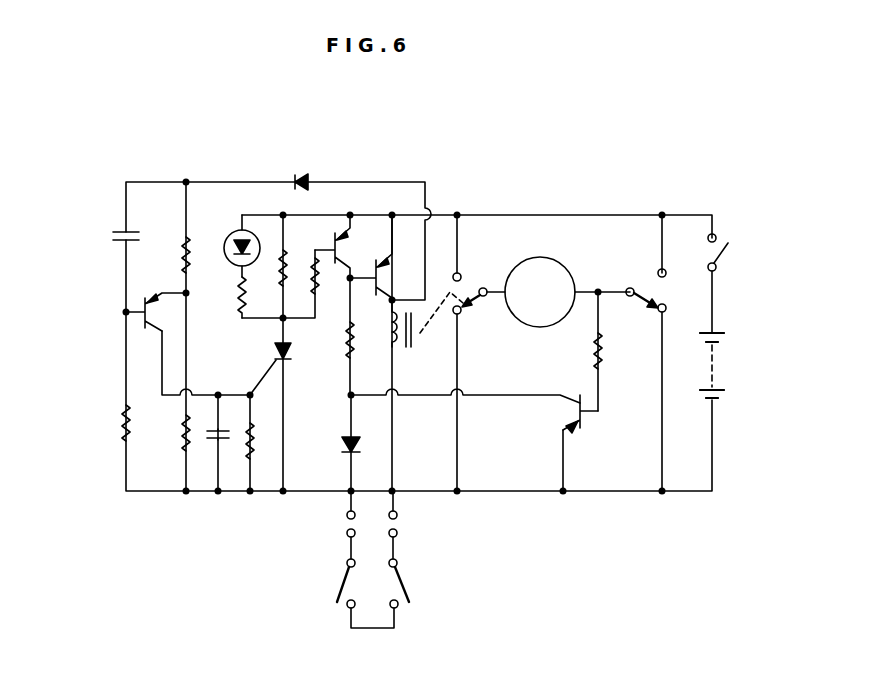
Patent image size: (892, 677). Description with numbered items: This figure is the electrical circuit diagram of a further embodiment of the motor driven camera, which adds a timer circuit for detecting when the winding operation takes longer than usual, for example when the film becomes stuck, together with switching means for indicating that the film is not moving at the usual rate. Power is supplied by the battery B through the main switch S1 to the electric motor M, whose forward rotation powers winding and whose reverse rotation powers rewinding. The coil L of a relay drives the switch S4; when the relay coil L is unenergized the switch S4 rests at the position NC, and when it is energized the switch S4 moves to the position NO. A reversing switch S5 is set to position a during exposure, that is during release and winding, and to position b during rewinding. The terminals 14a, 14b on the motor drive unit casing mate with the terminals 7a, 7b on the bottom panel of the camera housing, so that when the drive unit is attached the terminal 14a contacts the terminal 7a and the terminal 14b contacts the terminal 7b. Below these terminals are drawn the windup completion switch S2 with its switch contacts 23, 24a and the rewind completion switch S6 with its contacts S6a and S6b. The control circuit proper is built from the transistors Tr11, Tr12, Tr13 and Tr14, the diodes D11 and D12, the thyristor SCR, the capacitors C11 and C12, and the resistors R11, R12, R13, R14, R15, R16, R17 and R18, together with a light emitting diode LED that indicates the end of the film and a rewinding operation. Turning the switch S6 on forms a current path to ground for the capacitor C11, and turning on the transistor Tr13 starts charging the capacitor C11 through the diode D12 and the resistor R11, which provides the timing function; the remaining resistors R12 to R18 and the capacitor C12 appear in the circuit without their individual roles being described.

The capacitor C11 is at (112, 239).
The resistor R12 is at (206, 255).
The diode D12 is at (305, 167).
The light emitting diode LED is at (254, 227).
The resistor R15 is at (261, 297).
The resistor R16 is at (302, 262).
The resistor R17 is at (334, 276).
The transistor Tr11 is at (161, 312).
The transistor Tr12 is at (354, 246).
The transistor Tr13 is at (390, 257).
The resistor R18 is at (370, 340).
The relay coil L is at (408, 332).
The normally open position NO is at (444, 278).
The normally closed position NC is at (473, 325).
The relay switch S4 is at (465, 288).
The electric motor M is at (567, 292).
The resistor R11 is at (382, 387).
The reversing switch S5 is at (651, 290).
The rewinding position b is at (669, 277).
The exposure position a is at (669, 310).
The main switch S1 is at (729, 252).
The battery B is at (715, 365).
The thyristor SCR is at (294, 369).
The resistor R13 is at (186, 430).
The capacitor C12 is at (226, 437).
The resistor R14 is at (269, 441).
The diode D11 is at (372, 443).
The transistor Tr14 is at (564, 414).
The terminal 14b is at (341, 516).
The terminal 14a is at (414, 516).
The terminal 7b is at (344, 540).
The terminal 7a is at (408, 540).
The switch contact S6b is at (347, 566).
The switch contact 23 is at (398, 565).
The rewind completion switch S6 is at (338, 593).
The windup completion switch S2 is at (410, 591).
The switch contact S6a is at (350, 610).
The switch contacts 24a is at (398, 608).